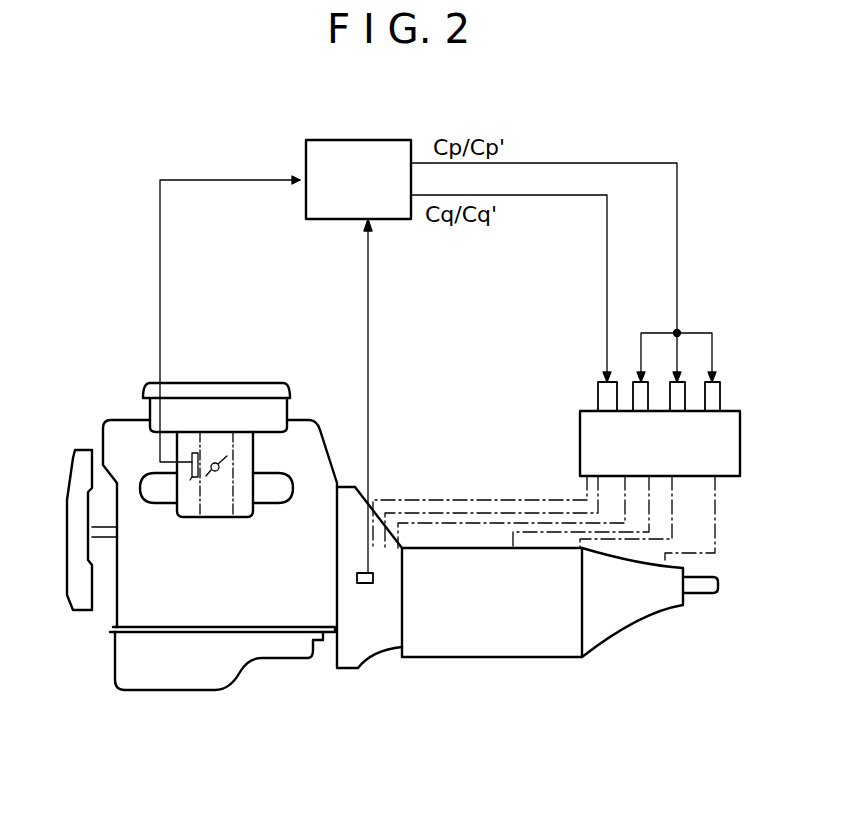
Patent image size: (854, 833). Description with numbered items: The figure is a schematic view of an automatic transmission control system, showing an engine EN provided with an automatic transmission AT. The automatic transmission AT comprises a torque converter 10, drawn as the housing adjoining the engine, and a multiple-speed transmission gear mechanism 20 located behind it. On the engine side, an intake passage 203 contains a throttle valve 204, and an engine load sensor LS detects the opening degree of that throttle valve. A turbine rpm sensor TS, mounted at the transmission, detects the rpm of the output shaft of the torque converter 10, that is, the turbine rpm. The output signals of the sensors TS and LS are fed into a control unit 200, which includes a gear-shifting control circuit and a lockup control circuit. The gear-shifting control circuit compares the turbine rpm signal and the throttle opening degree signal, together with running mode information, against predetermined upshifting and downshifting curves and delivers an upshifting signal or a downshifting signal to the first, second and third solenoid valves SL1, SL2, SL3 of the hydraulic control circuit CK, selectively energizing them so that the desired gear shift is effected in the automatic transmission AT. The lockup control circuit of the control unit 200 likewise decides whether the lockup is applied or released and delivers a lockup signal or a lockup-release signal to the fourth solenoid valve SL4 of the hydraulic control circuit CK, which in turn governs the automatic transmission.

The control unit 200 is at (357, 140).
The throttle valve 204 is at (223, 470).
The intake passage 203 is at (240, 503).
The engine load sensor LS is at (190, 517).
The engine EN is at (113, 606).
The torque converter 10 is at (363, 663).
The turbine rpm sensor TS is at (373, 578).
The automatic transmission AT is at (487, 659).
The multiple-speed transmission gear mechanism 20 is at (607, 630).
The hydraulic control circuit CK is at (580, 443).
The first solenoid valve SL1 is at (633, 393).
The second solenoid valve SL2 is at (685, 392).
The third solenoid valve SL3 is at (720, 400).
The fourth solenoid valve SL4 is at (598, 394).